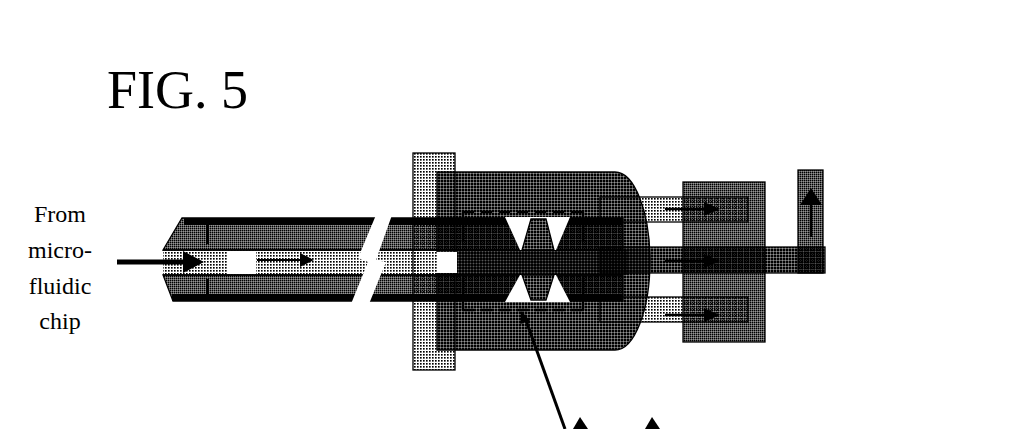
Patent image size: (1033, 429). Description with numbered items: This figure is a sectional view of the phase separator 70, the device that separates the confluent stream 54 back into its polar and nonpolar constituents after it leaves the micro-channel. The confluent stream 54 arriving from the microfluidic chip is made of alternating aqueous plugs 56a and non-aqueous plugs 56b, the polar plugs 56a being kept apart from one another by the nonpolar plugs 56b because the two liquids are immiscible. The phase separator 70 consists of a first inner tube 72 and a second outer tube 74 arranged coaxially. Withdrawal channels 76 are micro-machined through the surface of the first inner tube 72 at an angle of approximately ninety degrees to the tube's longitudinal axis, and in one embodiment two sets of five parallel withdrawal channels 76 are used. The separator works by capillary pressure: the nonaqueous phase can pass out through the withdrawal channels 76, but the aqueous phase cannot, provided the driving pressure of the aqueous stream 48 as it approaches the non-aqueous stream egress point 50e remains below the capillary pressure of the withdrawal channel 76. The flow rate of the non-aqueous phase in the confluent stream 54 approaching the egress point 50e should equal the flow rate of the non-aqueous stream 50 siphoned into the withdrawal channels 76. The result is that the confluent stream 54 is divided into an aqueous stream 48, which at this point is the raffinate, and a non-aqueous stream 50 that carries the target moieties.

The aqueous stream 48 is at (803, 262).
The non-aqueous stream 50 is at (737, 313).
The non-aqueous stream egress point 50e is at (512, 272).
The confluent stream 54 is at (333, 258).
The aqueous plugs 56a is at (208, 260).
The non-aqueous plugs 56b is at (243, 260).
The phase separator 70 is at (606, 90).
The first inner tube 72 is at (500, 195).
The second outer tube 74 is at (492, 237).
The withdrawal channels 76 is at (510, 252).